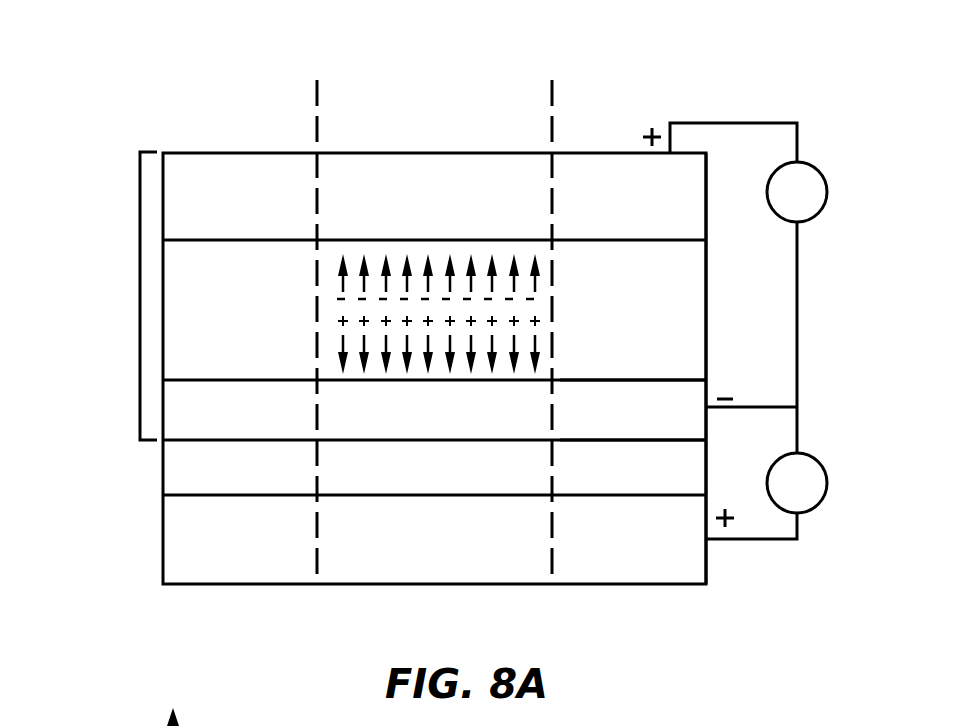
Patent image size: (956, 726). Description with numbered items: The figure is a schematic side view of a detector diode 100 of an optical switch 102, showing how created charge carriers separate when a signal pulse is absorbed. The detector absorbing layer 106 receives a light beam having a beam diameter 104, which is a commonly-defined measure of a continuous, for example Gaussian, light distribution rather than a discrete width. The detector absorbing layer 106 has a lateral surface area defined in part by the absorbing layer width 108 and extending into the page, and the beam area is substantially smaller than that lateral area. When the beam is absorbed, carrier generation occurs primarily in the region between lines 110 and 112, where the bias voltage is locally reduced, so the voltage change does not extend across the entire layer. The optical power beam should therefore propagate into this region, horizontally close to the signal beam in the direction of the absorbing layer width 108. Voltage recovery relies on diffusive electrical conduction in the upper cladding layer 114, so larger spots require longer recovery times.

The detector diode 100 is at (140, 282).
The optical switch 102 is at (168, 110).
The beam diameter 104 is at (551, 90).
The detector absorbing layer 106 is at (706, 281).
The absorbing layer width 108 is at (705, 612).
The line 110 is at (317, 288).
The line 112 is at (552, 288).
The upper cladding layer 114 is at (683, 429).